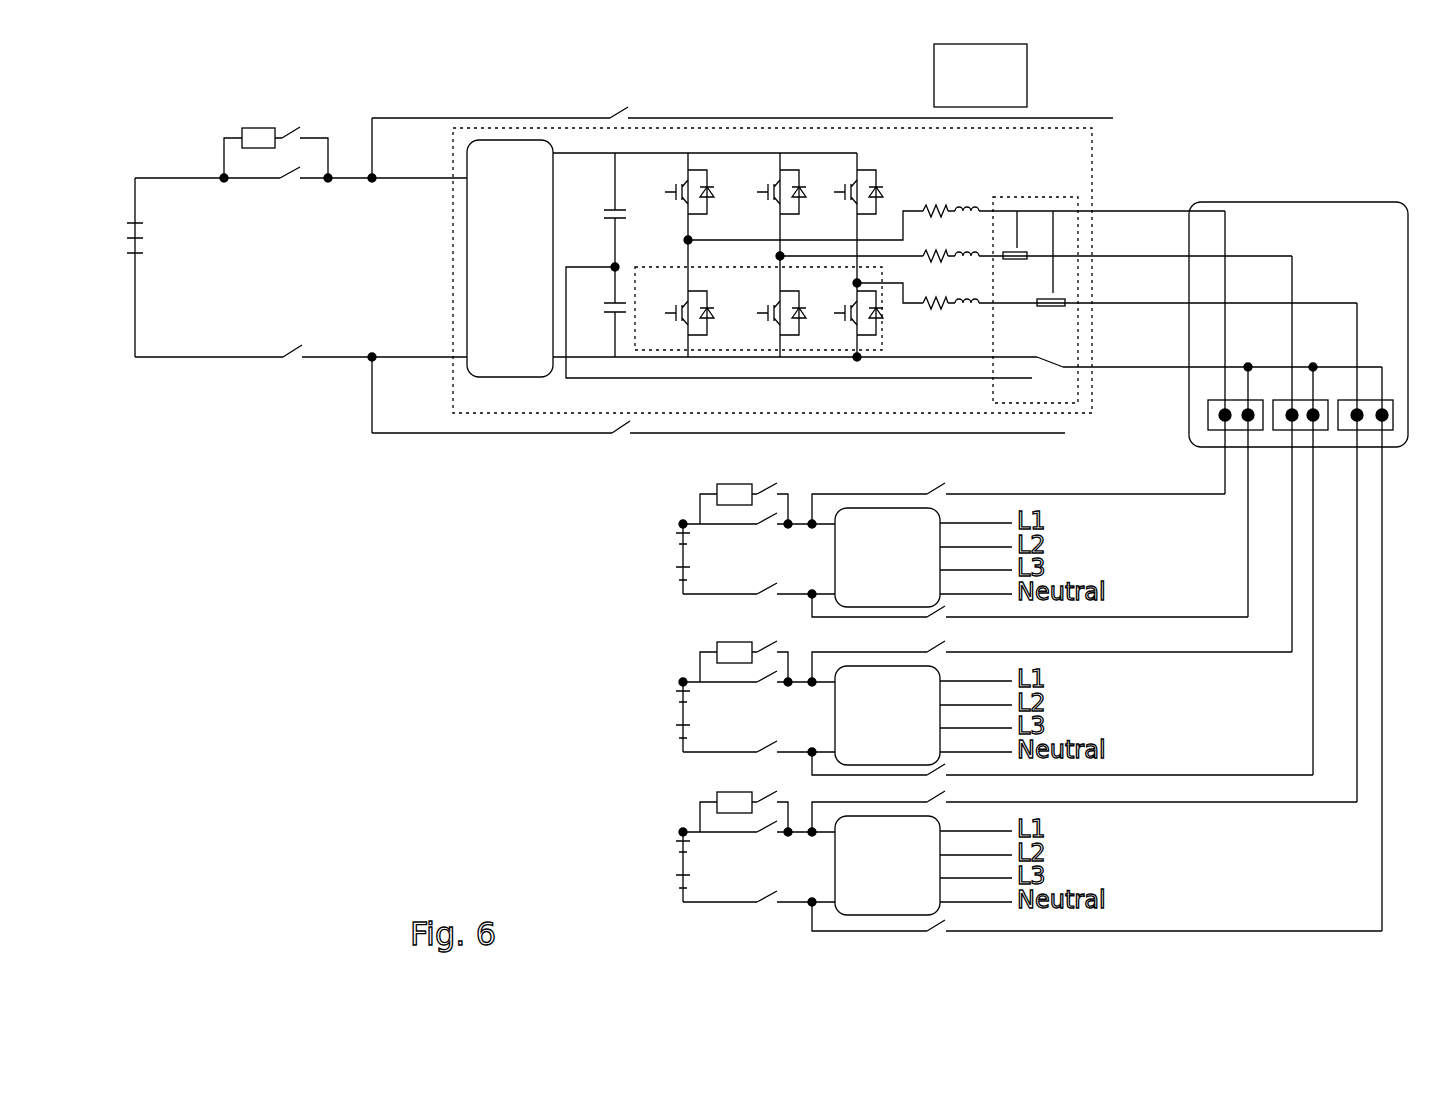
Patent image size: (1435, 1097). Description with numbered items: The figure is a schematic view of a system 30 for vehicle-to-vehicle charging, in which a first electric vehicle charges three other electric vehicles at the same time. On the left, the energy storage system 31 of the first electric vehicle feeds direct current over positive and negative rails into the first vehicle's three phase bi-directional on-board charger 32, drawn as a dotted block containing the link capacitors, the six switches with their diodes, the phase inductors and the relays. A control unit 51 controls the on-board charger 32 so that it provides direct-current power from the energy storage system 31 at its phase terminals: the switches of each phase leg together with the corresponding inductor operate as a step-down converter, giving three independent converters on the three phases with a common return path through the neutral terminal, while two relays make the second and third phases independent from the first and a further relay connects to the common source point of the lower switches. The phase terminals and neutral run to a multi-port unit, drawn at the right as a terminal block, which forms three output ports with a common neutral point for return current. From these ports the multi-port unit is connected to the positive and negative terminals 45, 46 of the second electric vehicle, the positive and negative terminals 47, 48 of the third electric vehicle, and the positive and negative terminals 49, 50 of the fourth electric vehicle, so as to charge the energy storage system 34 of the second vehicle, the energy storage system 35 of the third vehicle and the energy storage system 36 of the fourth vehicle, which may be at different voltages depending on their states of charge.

The system 30 is at (298, 92).
The energy storage system of the first electric vehicle 31 is at (398, 447).
The three phase bi-directional on-board charger 32 is at (1053, 447).
The energy storage system of the second electric vehicle 34 is at (670, 556).
The energy storage system of the third electric vehicle 35 is at (670, 714).
The energy storage system of the fourth electric vehicle 36 is at (672, 863).
The DC+ of the second electric vehicle 45 is at (795, 537).
The DC- of the second electric vehicle 46 is at (800, 595).
The DC+ of the third electric vehicle 47 is at (800, 695).
The DC- of the third electric vehicle 48 is at (800, 752).
The DC+ of the fourth electric vehicle 49 is at (807, 840).
The DC- of the fourth electric vehicle 50 is at (817, 893).
The control unit 51 is at (990, 88).